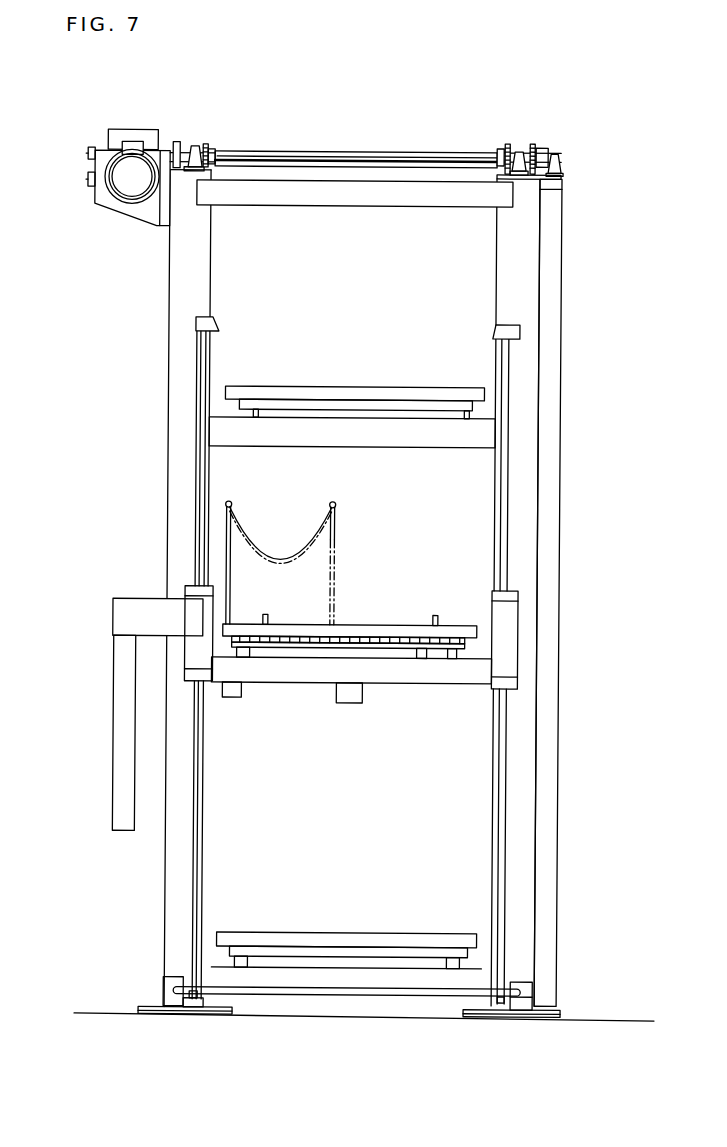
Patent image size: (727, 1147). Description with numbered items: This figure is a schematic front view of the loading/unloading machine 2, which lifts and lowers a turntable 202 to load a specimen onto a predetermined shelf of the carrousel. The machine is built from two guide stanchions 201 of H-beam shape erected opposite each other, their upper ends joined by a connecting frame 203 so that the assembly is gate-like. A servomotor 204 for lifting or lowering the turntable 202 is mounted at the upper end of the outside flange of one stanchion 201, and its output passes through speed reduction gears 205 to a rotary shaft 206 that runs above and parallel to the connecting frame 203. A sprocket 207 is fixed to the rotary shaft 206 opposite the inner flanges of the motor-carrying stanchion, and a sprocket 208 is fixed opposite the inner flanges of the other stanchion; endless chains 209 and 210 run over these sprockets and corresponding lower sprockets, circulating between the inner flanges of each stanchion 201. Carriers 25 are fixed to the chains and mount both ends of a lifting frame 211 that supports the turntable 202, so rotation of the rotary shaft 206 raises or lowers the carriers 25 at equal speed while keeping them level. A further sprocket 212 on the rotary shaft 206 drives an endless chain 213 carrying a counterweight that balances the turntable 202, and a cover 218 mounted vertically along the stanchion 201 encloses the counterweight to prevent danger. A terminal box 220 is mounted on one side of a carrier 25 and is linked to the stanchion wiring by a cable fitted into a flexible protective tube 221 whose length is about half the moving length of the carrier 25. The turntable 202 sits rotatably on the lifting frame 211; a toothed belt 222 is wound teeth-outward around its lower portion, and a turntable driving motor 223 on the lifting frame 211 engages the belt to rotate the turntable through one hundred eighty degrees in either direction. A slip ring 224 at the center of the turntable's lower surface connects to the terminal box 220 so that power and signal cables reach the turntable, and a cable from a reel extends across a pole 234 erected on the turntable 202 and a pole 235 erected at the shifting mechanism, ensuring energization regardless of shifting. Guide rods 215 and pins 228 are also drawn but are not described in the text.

The loading/unloading machine 2 is at (413, 152).
The carrier 25 is at (212, 702).
The guide stanchion 201 is at (207, 252).
The turntable 202 is at (349, 642).
The connecting frame 203 is at (338, 198).
The servomotor 204 is at (133, 187).
The speed reduction gears 205 is at (138, 130).
The rotary shaft 206 is at (337, 158).
The sprocket 207 is at (212, 149).
The sprocket 208 is at (506, 160).
The endless chain 209 is at (207, 145).
The endless chain 210 is at (512, 152).
The lifting frame 211 is at (433, 678).
The sprocket 212 is at (547, 151).
The endless chain 213 is at (532, 150).
The guide rod 215 is at (196, 815).
The cover 218 is at (548, 490).
The terminal box 220 is at (118, 608).
The flexible protective tube 221 is at (119, 770).
The toothed belt 222 is at (342, 646).
The turntable driving motor 223 is at (236, 699).
The slip ring 224 is at (352, 704).
The positioning pin 228 is at (265, 613).
The pole 234 is at (232, 505).
The pole 235 is at (335, 505).